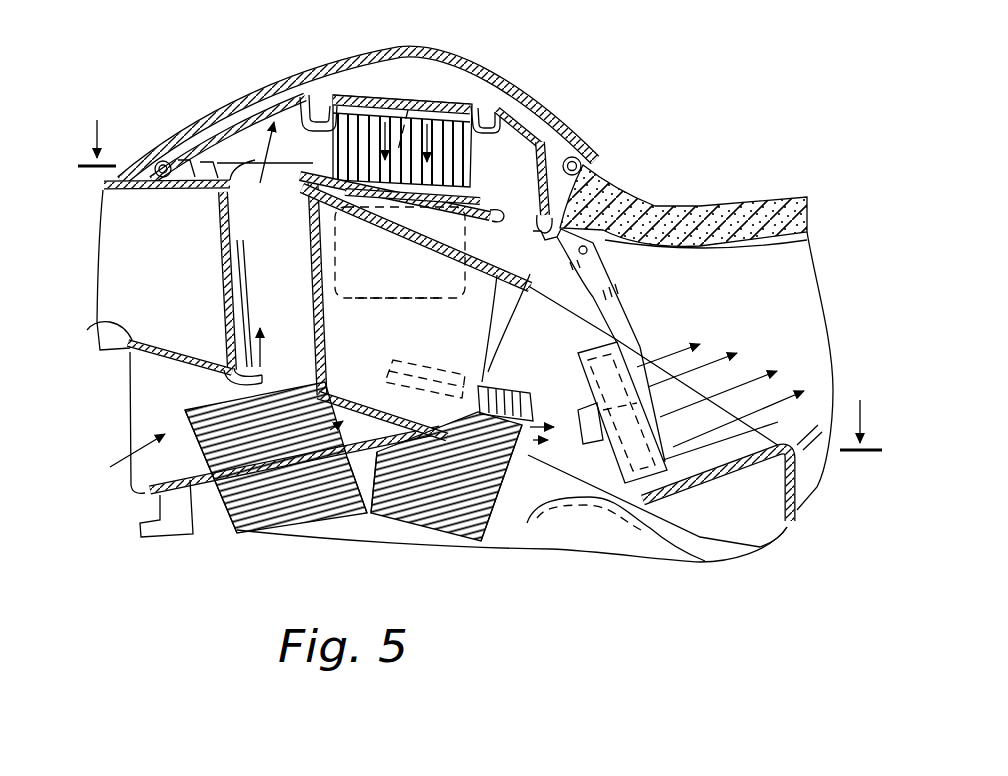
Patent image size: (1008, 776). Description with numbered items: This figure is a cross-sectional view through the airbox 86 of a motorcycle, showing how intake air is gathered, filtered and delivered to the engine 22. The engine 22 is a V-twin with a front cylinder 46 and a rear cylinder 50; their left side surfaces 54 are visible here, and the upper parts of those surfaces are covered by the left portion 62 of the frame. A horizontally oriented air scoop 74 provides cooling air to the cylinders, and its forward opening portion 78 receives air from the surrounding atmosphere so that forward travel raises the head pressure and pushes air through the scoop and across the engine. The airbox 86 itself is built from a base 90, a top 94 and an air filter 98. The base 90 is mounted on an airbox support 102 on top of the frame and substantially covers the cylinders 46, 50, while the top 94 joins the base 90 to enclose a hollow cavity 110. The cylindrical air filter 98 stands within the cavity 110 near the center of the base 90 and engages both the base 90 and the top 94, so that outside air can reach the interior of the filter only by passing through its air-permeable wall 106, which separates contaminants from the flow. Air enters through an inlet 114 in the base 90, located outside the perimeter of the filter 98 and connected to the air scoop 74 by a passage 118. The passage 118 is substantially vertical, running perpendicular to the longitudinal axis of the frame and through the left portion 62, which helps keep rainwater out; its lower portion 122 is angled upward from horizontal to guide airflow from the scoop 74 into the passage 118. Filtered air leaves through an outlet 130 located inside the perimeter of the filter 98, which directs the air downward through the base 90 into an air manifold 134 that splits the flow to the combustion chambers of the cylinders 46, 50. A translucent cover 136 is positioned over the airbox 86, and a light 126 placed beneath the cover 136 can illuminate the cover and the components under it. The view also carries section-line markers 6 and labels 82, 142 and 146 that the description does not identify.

The section line 6- 6 is at (480, 269).
The engine 22 is at (368, 519).
The front cylinder 46 is at (276, 479).
The rear cylinder 50 is at (446, 506).
The left side surfaces 54 is at (353, 513).
The left portion of the frame 62 is at (88, 335).
The air scoop 74 is at (130, 505).
The forward opening portion 78 is at (107, 422).
The air outlet panel 82 is at (459, 374).
The airbox 86 is at (580, 159).
The base 90 is at (573, 301).
The top 94 is at (424, 68).
The air filter 98 is at (402, 102).
The airbox support 102 is at (400, 252).
The wall 106 is at (326, 104).
The hollow cavity 110 is at (358, 116).
The inlet 114 is at (163, 253).
The passage 118 is at (204, 281).
The lower portion 122 is at (206, 382).
The light 126 is at (395, 251).
The outlet 130 is at (426, 81).
The air manifold 134 is at (400, 308).
The cover 136 is at (550, 89).
The deflector panel 142 is at (622, 481).
The outlet channel 146 is at (615, 549).